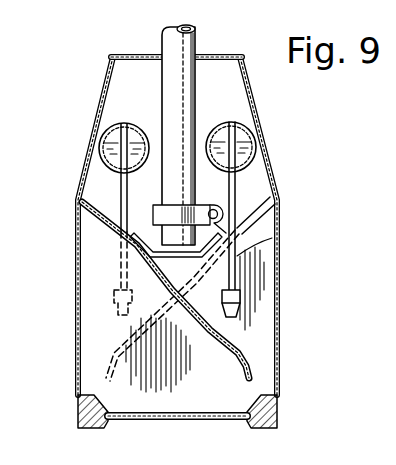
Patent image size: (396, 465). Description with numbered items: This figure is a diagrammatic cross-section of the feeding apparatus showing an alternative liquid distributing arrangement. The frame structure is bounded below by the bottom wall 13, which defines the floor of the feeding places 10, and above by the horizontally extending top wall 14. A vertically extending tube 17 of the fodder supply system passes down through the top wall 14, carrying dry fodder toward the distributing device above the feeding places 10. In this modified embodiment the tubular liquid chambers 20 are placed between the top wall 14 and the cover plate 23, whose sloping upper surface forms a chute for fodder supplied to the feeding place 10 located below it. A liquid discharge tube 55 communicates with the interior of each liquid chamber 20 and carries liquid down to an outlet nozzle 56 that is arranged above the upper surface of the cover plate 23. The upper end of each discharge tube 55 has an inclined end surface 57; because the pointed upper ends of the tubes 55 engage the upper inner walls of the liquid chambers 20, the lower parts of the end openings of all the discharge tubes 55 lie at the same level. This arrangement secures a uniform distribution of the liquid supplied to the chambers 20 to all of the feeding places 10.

The eating place 10 is at (103, 332).
The bottom wall 13 is at (176, 419).
The top wall 14 is at (218, 57).
The vertically extending tube 17 is at (162, 33).
The liquid chamber 20 is at (98, 152).
The cover plate 23 is at (237, 347).
The liquid discharge tube 55 is at (100, 212).
The outlet nozzle 56 is at (243, 302).
The inclined end surface 57 is at (114, 122).